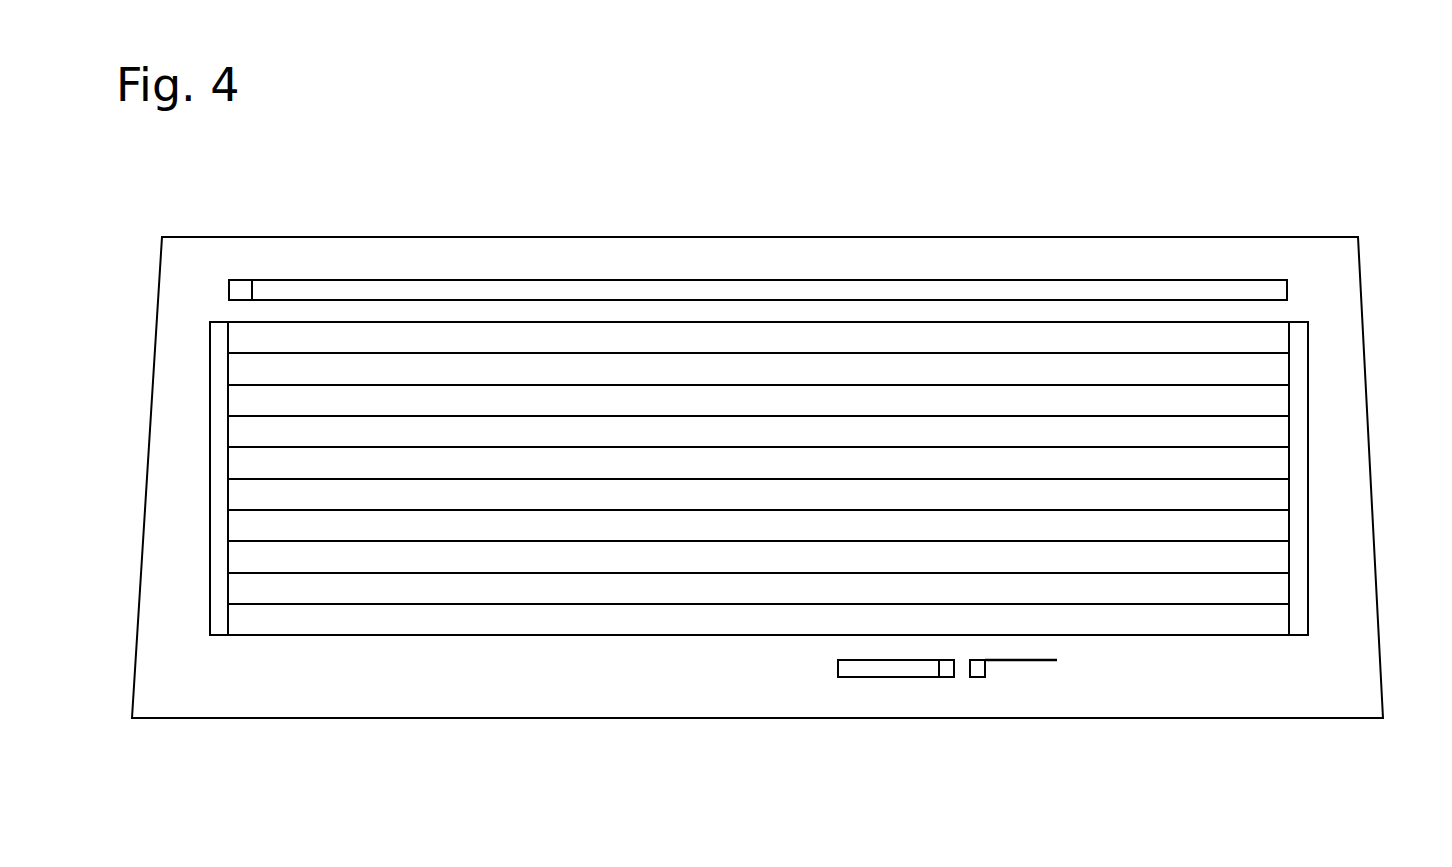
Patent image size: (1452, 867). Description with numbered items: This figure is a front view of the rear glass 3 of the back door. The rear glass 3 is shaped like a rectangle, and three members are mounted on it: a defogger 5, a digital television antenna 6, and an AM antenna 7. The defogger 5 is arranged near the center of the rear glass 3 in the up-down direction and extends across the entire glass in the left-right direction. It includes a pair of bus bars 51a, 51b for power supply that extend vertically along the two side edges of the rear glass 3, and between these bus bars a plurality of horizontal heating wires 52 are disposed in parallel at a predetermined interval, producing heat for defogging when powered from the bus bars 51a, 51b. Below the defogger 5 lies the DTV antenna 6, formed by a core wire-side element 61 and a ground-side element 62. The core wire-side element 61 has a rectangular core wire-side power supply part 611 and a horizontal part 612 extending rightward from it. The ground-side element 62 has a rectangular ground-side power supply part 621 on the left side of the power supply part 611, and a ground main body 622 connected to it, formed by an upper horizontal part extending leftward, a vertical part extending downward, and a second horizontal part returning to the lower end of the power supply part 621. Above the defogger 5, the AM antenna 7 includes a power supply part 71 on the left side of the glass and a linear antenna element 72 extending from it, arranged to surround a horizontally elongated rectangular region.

The rear glass 3 is at (185, 290).
The defogger 5 is at (759, 414).
The bus bar 51a is at (225, 541).
The bus bar 51b is at (1300, 497).
The heating wires 52 is at (585, 353).
The DTV antenna 6 is at (898, 723).
The core wire-side element 61 is at (1048, 723).
The core wire-side power supply part 611 is at (975, 678).
The horizontal part 612 is at (1031, 662).
The ground-side element 62 is at (863, 719).
The ground-side power supply part 621 is at (944, 678).
The ground main body 622 is at (862, 678).
The AM antenna 7 is at (754, 237).
The power supply part 71 is at (241, 289).
The antenna element 72 is at (338, 279).